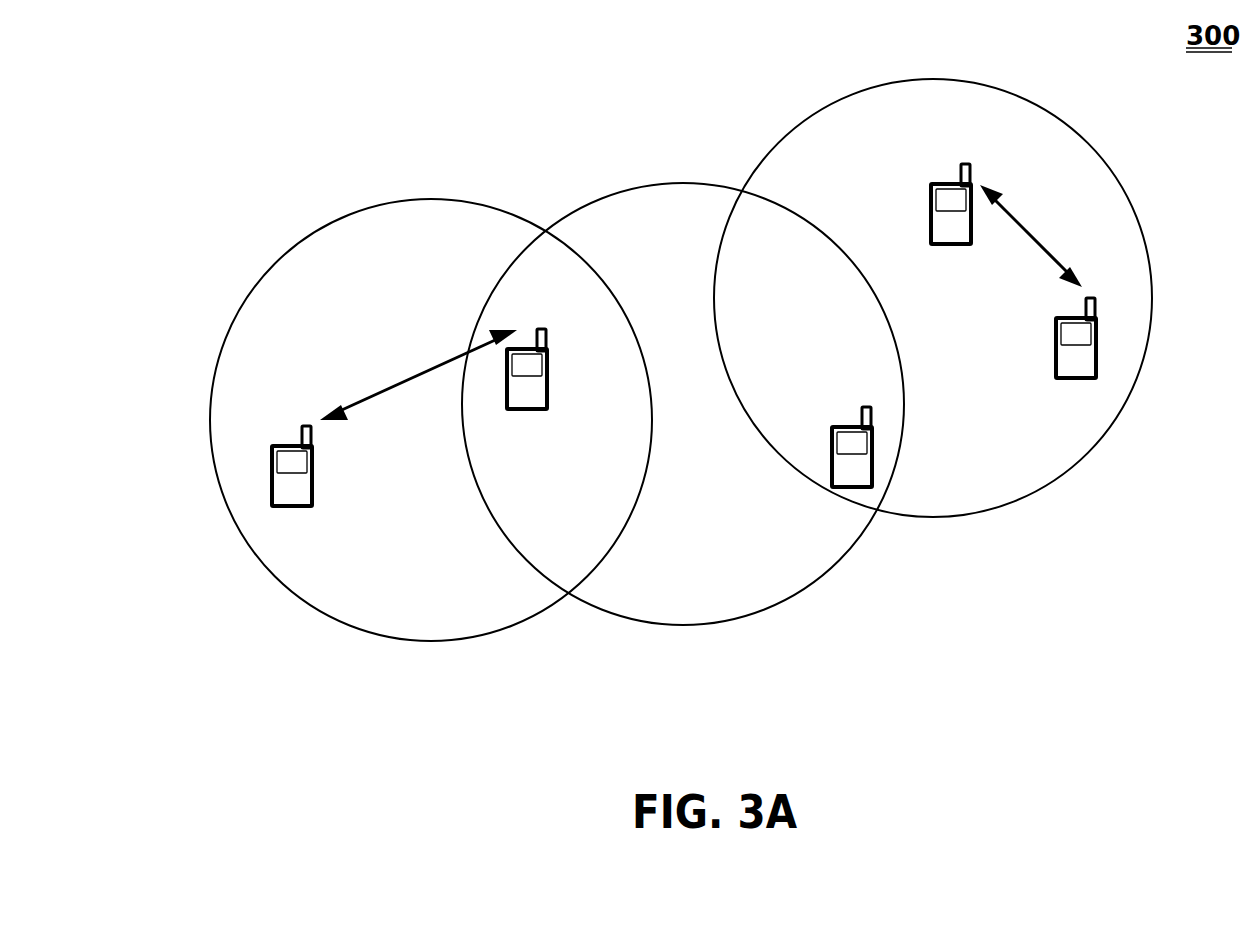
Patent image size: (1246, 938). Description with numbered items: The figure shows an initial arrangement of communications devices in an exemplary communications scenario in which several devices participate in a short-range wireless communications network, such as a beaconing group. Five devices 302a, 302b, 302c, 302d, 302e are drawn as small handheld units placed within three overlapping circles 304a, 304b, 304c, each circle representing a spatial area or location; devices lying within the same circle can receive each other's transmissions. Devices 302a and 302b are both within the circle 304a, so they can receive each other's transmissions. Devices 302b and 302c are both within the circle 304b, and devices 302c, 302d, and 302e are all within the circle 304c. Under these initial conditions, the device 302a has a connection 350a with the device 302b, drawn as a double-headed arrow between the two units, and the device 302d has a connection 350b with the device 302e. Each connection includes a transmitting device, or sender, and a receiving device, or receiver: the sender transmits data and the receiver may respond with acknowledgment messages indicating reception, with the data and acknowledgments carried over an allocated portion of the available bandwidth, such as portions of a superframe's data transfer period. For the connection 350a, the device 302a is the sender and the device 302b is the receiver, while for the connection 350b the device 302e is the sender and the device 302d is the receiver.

The device 302a is at (313, 492).
The device 302b is at (548, 366).
The device 302c is at (850, 427).
The device 302d is at (955, 244).
The device 302e is at (1075, 378).
The circle 304a is at (365, 632).
The circle 304b is at (698, 626).
The circle 304c is at (997, 511).
The connection 350a is at (433, 365).
The connection 350b is at (1030, 232).